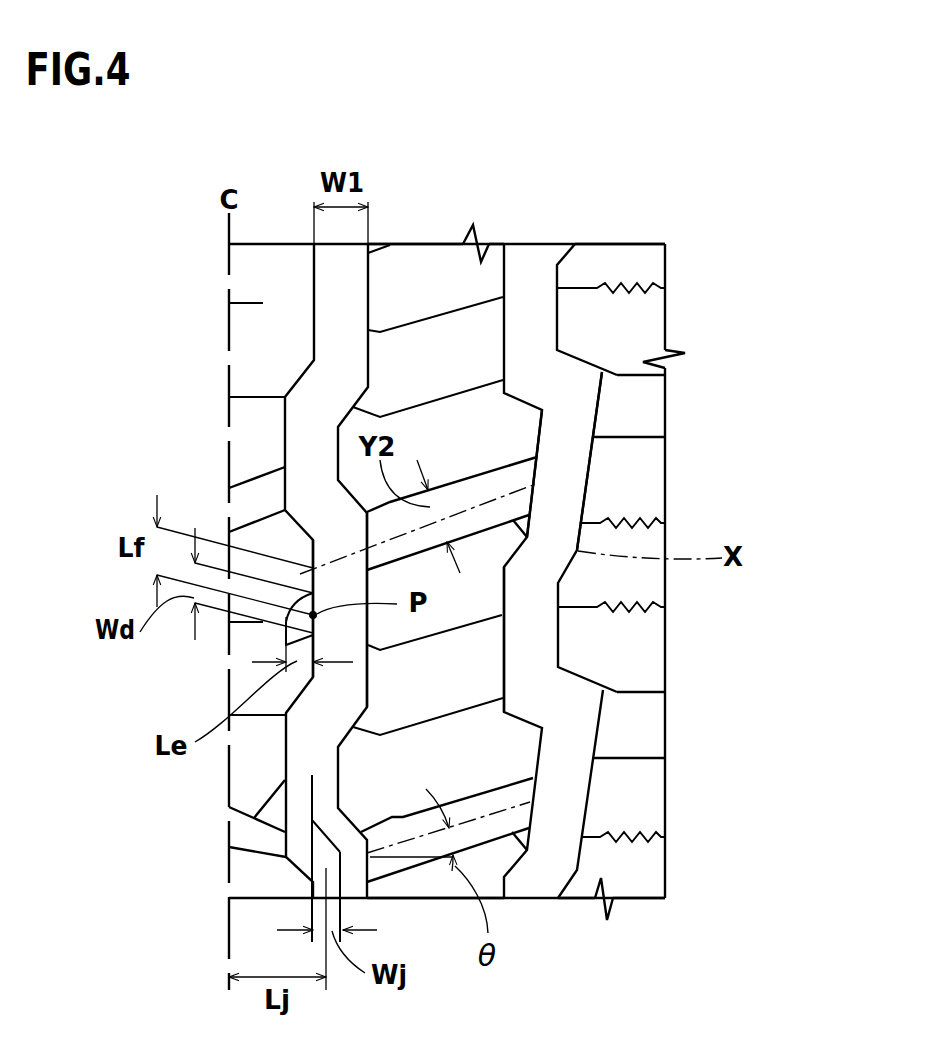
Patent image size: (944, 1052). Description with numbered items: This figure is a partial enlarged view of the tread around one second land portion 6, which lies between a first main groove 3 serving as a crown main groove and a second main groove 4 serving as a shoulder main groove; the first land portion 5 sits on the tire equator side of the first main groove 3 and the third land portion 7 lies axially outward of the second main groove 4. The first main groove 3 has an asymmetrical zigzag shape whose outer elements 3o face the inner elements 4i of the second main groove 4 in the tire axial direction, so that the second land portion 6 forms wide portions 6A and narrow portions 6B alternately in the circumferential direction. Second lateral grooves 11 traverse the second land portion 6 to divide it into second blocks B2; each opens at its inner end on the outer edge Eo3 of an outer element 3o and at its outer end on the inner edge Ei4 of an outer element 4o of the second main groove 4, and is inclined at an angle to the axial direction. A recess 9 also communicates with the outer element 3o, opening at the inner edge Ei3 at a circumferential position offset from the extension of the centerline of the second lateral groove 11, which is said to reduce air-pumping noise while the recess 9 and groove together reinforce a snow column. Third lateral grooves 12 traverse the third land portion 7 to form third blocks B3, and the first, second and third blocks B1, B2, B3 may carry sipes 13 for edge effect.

The first main groove 3 is at (333, 287).
The second main groove 4 is at (532, 280).
The first land portion 5 is at (260, 267).
The second land portion 6 is at (433, 280).
The third land portion 7 is at (620, 268).
The recess 9 is at (283, 637).
The second lateral groove 11 is at (497, 483).
The third lateral groove 12 is at (628, 738).
The sipe 13 is at (238, 303).
The wide portion 6A is at (423, 445).
The narrow portion 6B is at (452, 610).
The first block B1 is at (289, 365).
The second block B2 is at (455, 366).
The third block B3 is at (642, 815).
The outer element 3o is at (357, 668).
The outer element 4o is at (563, 497).
The inner element 4i is at (543, 620).
The outer edge Eo3 is at (377, 523).
The inner edge Ei3 is at (313, 567).
The inner edge Ei4 is at (538, 441).